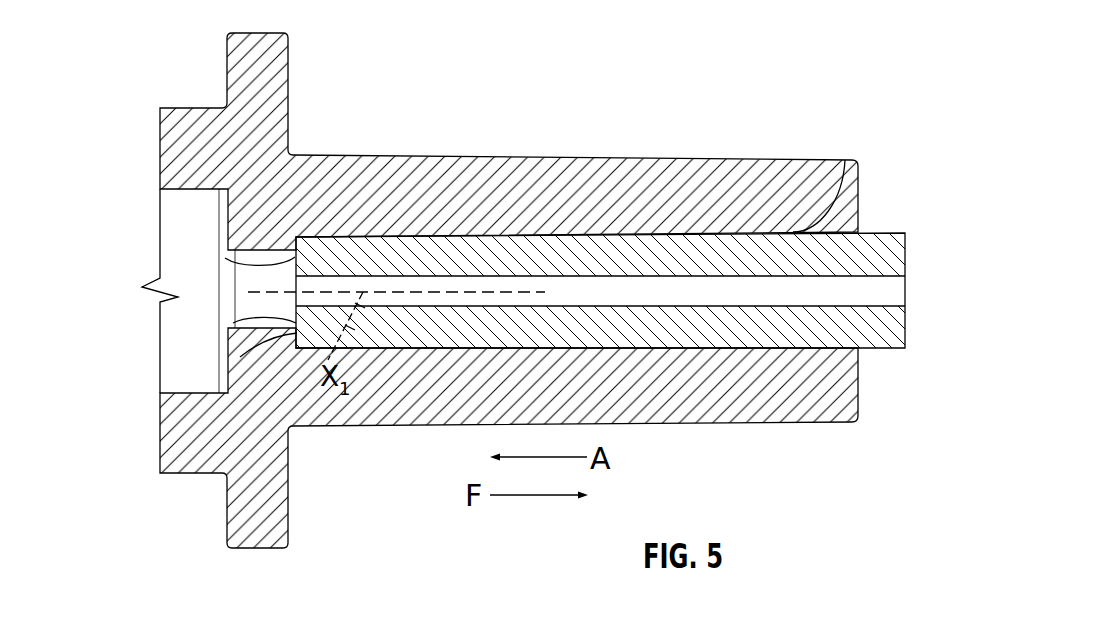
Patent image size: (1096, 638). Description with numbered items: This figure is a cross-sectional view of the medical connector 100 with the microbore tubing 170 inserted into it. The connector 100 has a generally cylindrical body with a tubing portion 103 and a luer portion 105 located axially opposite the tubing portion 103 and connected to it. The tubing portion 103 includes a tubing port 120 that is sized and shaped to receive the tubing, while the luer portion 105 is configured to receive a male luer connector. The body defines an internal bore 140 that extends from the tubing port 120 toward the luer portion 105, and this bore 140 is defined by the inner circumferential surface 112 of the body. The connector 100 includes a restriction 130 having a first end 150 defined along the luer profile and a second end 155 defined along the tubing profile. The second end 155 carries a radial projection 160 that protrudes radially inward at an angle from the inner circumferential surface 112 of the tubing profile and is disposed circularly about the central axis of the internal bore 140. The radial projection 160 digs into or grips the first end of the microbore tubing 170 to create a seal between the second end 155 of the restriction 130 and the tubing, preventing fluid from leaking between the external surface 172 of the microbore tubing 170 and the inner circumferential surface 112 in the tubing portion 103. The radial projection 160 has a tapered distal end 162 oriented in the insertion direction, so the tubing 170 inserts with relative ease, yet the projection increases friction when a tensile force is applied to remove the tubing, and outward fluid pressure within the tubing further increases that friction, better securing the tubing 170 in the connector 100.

The medical connector 100 is at (506, 122).
The tubing portion 103 is at (777, 427).
The luer portion 105 is at (155, 92).
The inner circumferential surface 112 is at (845, 160).
The tubing port 120 is at (862, 226).
The restriction 130 is at (218, 350).
The internal bore 140 is at (845, 357).
The first end 150 is at (228, 250).
The second end 155 is at (295, 255).
The radial projection 160 is at (207, 188).
The tapered distal end 162 is at (225, 258).
The microbore tubing 170 is at (910, 262).
The external surface 172 is at (877, 350).